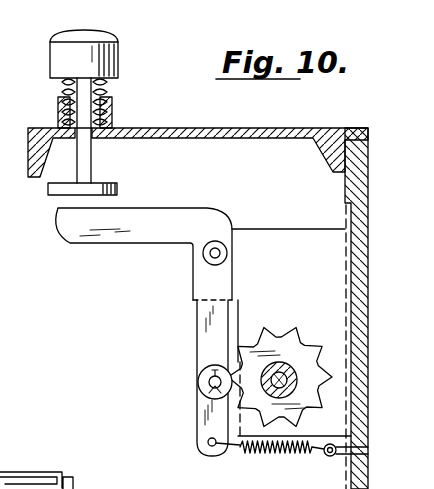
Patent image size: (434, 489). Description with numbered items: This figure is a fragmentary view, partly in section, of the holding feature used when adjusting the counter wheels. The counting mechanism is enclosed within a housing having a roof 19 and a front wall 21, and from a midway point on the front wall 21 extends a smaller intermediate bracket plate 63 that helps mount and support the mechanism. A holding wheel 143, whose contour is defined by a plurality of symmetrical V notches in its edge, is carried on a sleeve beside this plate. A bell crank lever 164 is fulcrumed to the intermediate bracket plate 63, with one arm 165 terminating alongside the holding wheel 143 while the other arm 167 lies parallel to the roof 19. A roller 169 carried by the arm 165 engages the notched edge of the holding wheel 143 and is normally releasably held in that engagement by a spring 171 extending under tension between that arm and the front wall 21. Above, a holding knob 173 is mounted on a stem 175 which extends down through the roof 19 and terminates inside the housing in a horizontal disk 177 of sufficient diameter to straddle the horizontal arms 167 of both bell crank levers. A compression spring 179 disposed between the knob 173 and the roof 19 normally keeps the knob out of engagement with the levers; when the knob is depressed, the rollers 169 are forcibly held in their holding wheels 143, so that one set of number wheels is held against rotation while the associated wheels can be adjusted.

The roof 19 is at (210, 128).
The front wall 21 is at (369, 333).
The intermediate bracket plate 63 is at (288, 237).
The holding wheel 143 is at (280, 341).
The bell crank lever 164 is at (202, 236).
The arm 165 is at (211, 318).
The arm 167 is at (92, 226).
The roller 169 is at (206, 389).
The spring 171 is at (279, 457).
The holding knob 173 is at (62, 40).
The stem 175 is at (148, 83).
The horizontal disk 177 is at (103, 189).
The compression spring 179 is at (67, 109).